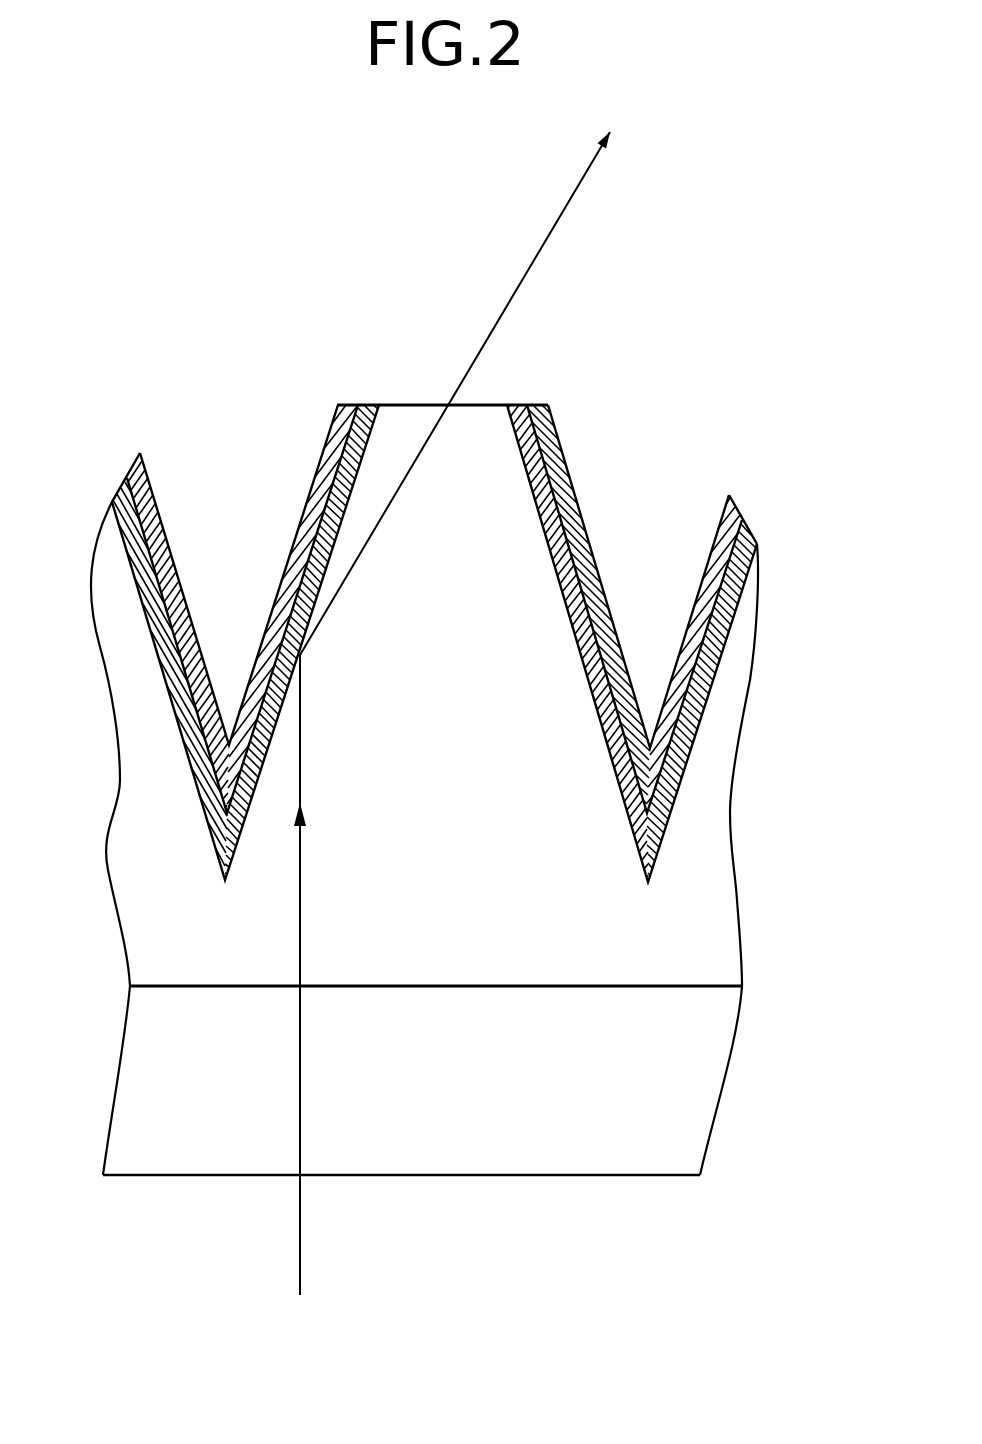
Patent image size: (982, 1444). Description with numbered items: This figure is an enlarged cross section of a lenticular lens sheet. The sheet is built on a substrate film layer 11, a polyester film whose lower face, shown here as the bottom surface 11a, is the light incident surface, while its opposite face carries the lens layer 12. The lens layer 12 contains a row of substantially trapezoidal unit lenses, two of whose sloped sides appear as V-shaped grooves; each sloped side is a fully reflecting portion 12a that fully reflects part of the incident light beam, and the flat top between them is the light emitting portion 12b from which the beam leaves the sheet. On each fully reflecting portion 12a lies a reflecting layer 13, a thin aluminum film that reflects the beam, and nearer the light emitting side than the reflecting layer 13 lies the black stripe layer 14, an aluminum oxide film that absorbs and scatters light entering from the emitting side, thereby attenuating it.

The substrate film layer 11 is at (690, 1093).
The bottom surface of base substrate 11a is at (622, 1177).
The lens layer 12 is at (712, 920).
The fully reflecting portion 12a is at (549, 553).
The light emitting portion 12b is at (487, 404).
The reflecting layer 13 is at (370, 404).
The black stripe layer 14 is at (348, 404).